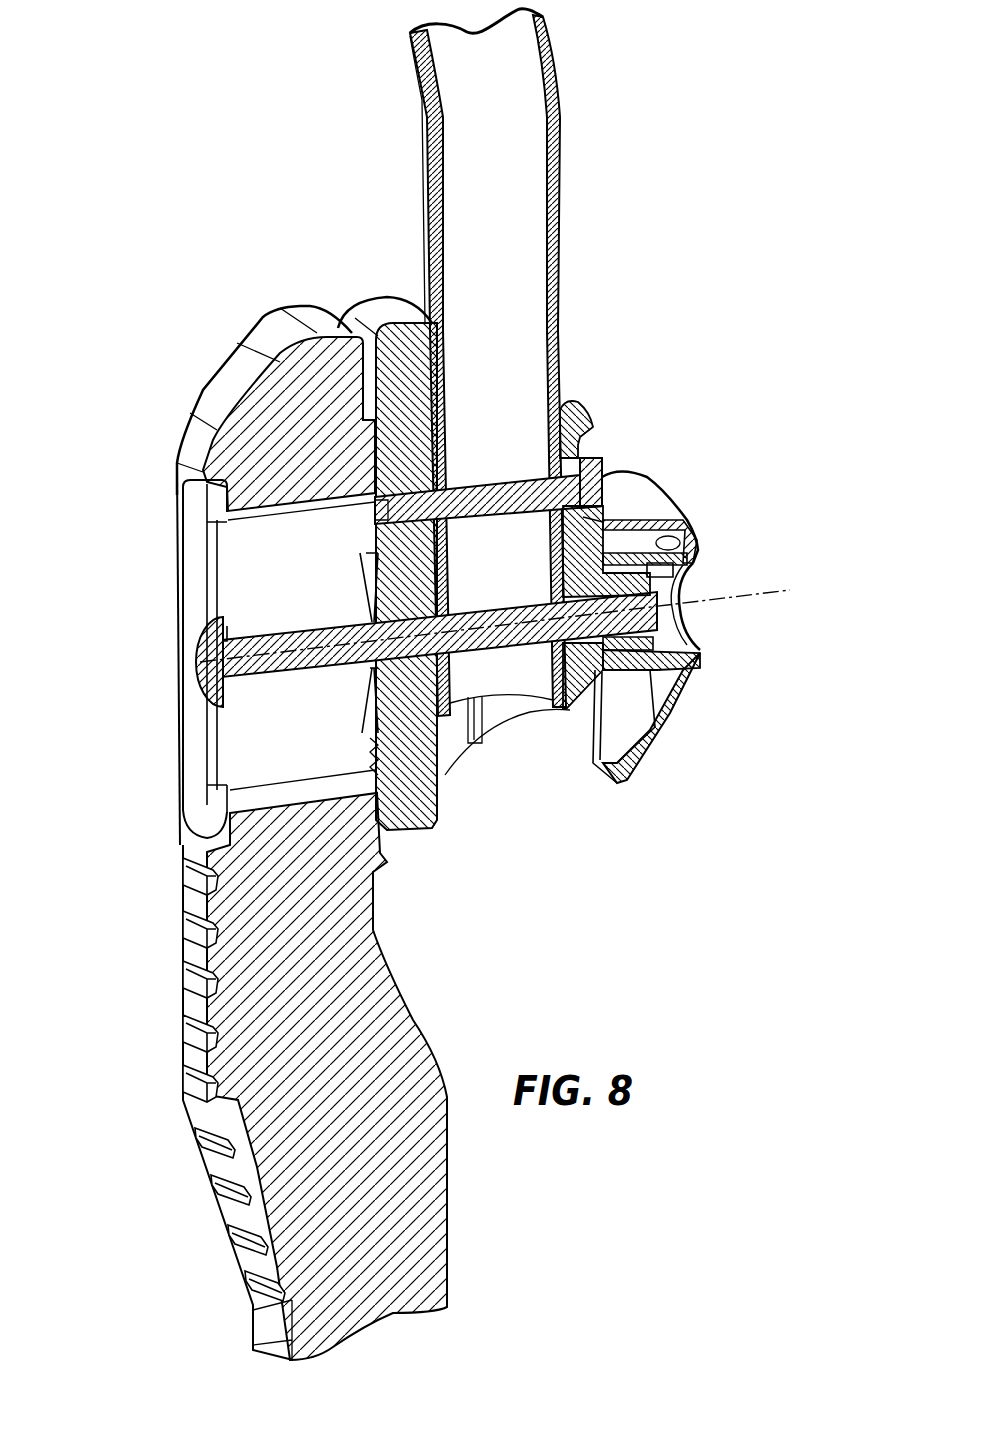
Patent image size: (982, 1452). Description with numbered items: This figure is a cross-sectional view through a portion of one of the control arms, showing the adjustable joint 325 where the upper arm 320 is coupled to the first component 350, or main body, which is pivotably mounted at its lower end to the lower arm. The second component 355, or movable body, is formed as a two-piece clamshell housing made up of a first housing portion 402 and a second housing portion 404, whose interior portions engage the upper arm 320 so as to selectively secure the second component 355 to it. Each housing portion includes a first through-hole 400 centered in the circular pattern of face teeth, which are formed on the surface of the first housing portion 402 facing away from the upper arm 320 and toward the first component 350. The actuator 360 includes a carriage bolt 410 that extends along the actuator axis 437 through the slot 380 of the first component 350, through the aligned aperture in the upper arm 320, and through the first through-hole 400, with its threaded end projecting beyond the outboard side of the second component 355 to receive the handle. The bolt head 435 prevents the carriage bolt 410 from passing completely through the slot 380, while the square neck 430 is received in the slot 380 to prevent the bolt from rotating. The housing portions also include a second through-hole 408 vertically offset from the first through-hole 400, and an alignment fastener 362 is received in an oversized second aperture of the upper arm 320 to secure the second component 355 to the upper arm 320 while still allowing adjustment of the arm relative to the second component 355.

The upper arm 320 is at (560, 177).
The adjustable joint 325 is at (522, 862).
The first component 350 is at (193, 1003).
The second component 355 is at (352, 280).
The actuator 360 is at (687, 710).
The alignment fastener 362 is at (593, 487).
The slot 380 is at (210, 557).
The first through-hole 400 is at (440, 640).
The first housing portion 402 is at (422, 832).
The second housing portion 404 is at (578, 660).
The second through-hole 408 is at (388, 500).
The carriage bolt 410 is at (288, 670).
The square neck 430 is at (228, 640).
The bolt head 435 is at (200, 653).
The actuator axis 437 is at (713, 600).